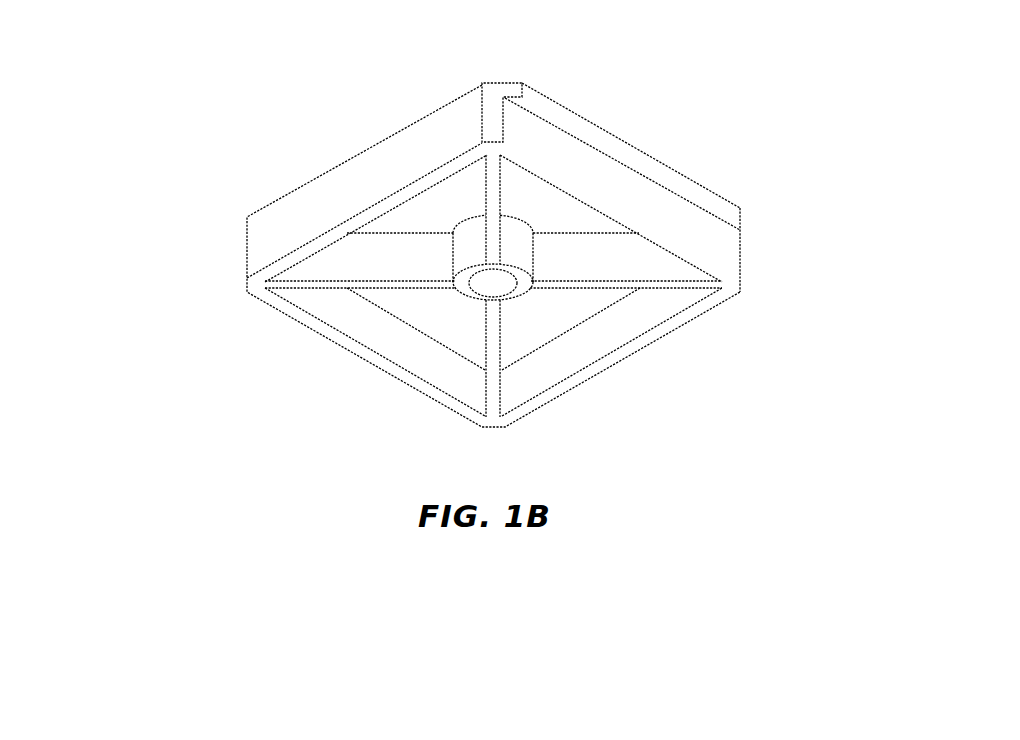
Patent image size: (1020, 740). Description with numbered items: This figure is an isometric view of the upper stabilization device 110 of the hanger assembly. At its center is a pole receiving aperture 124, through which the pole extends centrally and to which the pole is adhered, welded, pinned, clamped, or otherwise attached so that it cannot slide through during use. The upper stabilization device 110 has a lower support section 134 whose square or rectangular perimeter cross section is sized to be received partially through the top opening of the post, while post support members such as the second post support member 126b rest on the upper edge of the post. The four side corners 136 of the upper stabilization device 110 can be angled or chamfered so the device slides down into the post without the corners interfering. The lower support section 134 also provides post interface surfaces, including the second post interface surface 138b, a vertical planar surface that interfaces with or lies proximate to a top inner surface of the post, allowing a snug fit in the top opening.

The upper stabilization device 110 is at (215, 149).
The pole receiving aperture 124 is at (498, 292).
The second post support member 126b is at (727, 208).
The lower support section 134 is at (633, 189).
The side corner 136 is at (493, 100).
The second post interface surface 138b is at (720, 238).